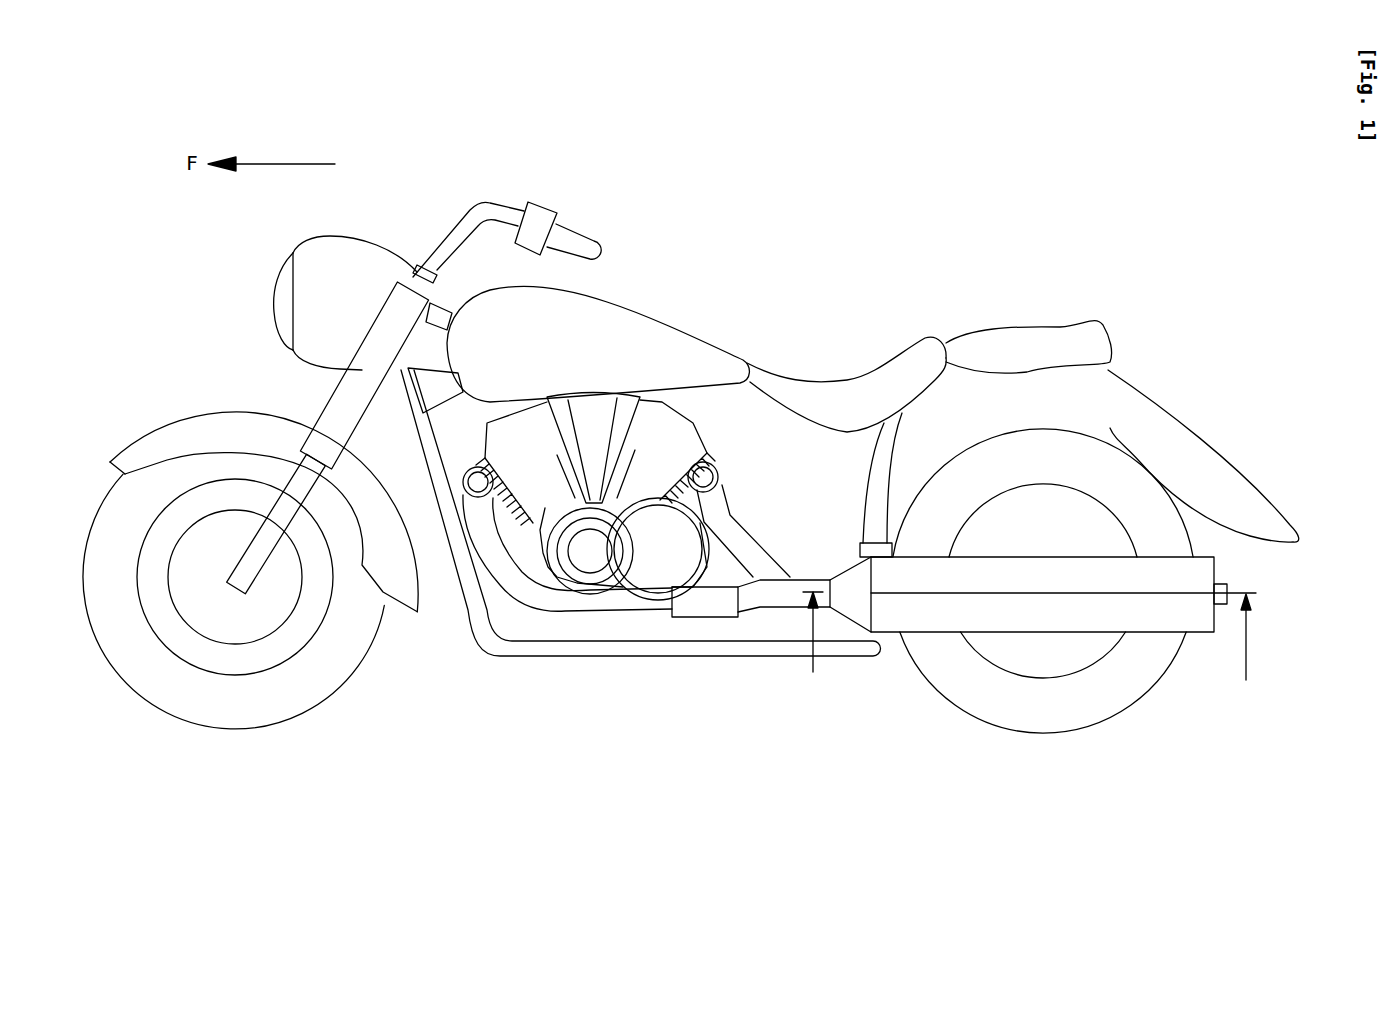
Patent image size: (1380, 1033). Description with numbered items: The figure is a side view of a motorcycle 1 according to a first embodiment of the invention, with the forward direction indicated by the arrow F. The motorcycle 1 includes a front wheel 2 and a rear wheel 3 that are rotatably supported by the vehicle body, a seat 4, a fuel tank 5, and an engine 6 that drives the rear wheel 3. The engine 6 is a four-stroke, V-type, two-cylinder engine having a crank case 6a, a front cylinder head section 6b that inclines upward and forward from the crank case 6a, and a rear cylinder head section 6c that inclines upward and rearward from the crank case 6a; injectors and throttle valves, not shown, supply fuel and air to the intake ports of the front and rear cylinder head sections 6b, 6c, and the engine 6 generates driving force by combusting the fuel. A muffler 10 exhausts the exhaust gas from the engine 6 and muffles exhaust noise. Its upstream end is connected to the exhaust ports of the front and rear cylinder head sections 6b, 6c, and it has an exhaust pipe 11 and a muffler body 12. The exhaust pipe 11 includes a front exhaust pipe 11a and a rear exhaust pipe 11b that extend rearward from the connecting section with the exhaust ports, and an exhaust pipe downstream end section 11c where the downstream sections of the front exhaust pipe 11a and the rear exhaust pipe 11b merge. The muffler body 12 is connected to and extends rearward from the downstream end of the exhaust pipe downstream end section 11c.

The motorcycle 1 is at (730, 185).
The front wheel 2 is at (166, 482).
The rear wheel 3 is at (1117, 482).
The seat 4 is at (868, 403).
The fuel tank 5 is at (602, 353).
The engine 6 is at (575, 752).
The crank case 6a is at (647, 463).
The front cylinder head section 6b is at (533, 514).
The rear cylinder head section 6c is at (593, 557).
The muffler 10 is at (678, 815).
The exhaust pipe 11 is at (590, 752).
The front exhaust pipe 11a is at (627, 598).
The rear exhaust pipe 11b is at (740, 595).
The exhaust pipe downstream end section 11c is at (793, 593).
The muffler body 12 is at (933, 617).